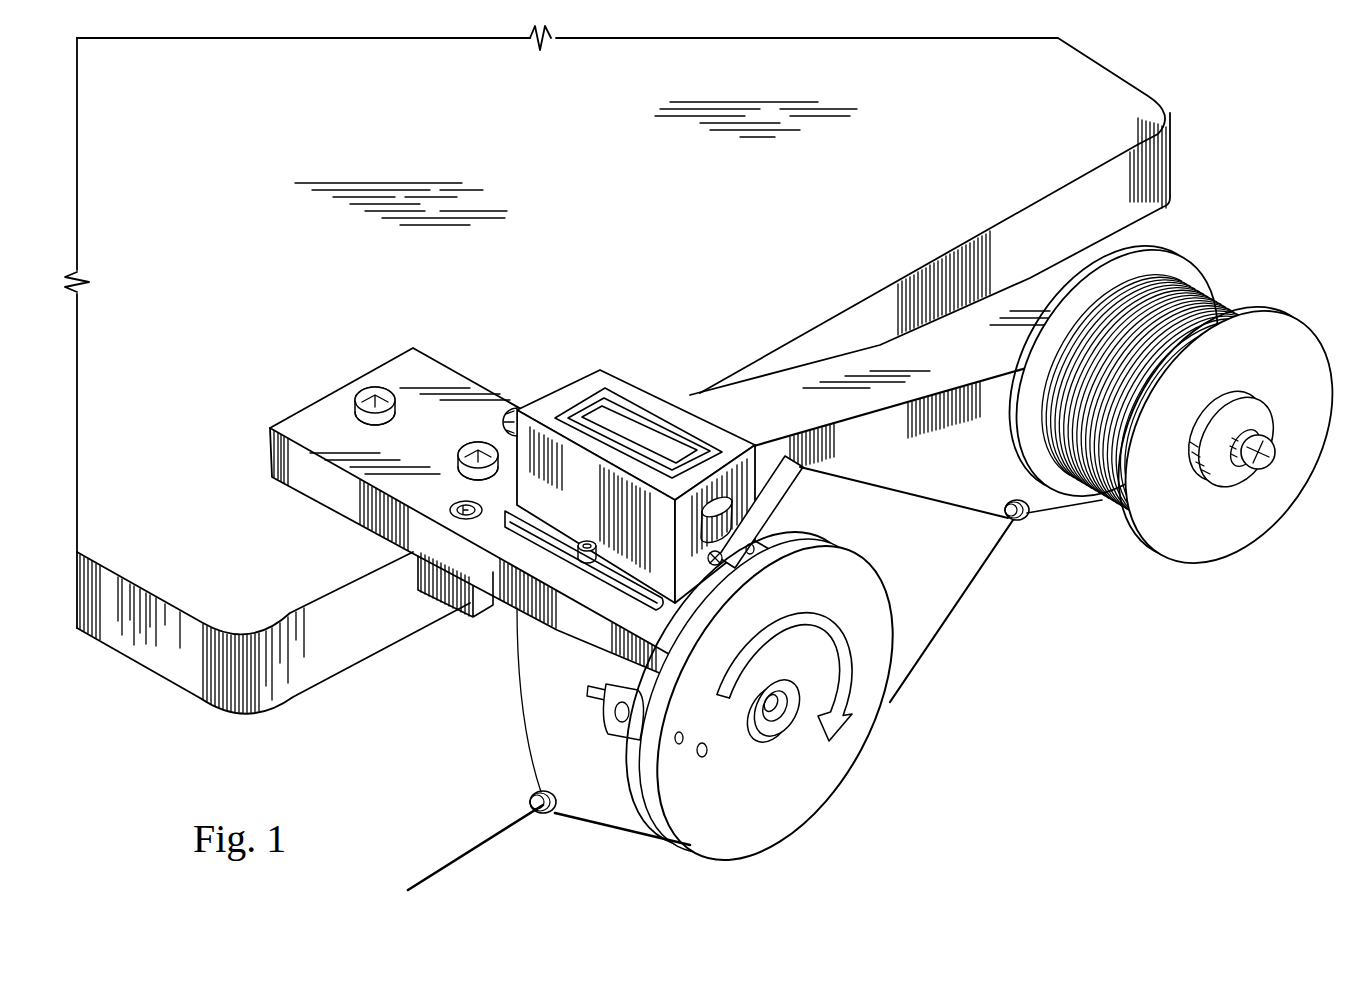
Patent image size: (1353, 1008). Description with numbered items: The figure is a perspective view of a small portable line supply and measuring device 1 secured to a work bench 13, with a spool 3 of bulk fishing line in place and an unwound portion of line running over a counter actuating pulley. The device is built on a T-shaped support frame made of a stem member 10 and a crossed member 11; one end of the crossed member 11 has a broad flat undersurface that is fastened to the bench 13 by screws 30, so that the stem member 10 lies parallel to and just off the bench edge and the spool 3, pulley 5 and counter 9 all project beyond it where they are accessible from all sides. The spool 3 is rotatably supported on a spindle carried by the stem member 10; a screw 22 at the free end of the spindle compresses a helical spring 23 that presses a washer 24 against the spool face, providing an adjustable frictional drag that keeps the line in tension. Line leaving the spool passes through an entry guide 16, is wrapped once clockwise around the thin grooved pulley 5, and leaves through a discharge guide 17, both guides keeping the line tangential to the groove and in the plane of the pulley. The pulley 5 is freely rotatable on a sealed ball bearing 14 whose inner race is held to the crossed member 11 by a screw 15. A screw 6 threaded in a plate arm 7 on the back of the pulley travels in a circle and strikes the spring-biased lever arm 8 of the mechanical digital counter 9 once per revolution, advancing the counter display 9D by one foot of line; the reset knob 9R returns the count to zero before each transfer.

The line supply and measuring device 1 is at (876, 797).
The spool 3 is at (1160, 404).
The pulley 5 is at (760, 696).
The screw 6 is at (590, 693).
The plate arm 7 is at (613, 717).
The lever arm 8 is at (773, 508).
The mechanical digital counter 9 is at (629, 466).
The counter display 9D is at (617, 422).
The manual reset knob 9R is at (527, 400).
The stem member 10 is at (465, 612).
The crossed member 11 is at (345, 502).
The work bench 13 is at (330, 665).
The ball bearing 14 is at (790, 720).
The screw 15 is at (772, 717).
The entry guide 16 is at (1023, 527).
The discharge guide 17 is at (528, 797).
The screw 22 is at (1277, 455).
The helical spring 23 is at (1240, 470).
The washer 24 is at (1222, 483).
The screws 30 is at (360, 387).